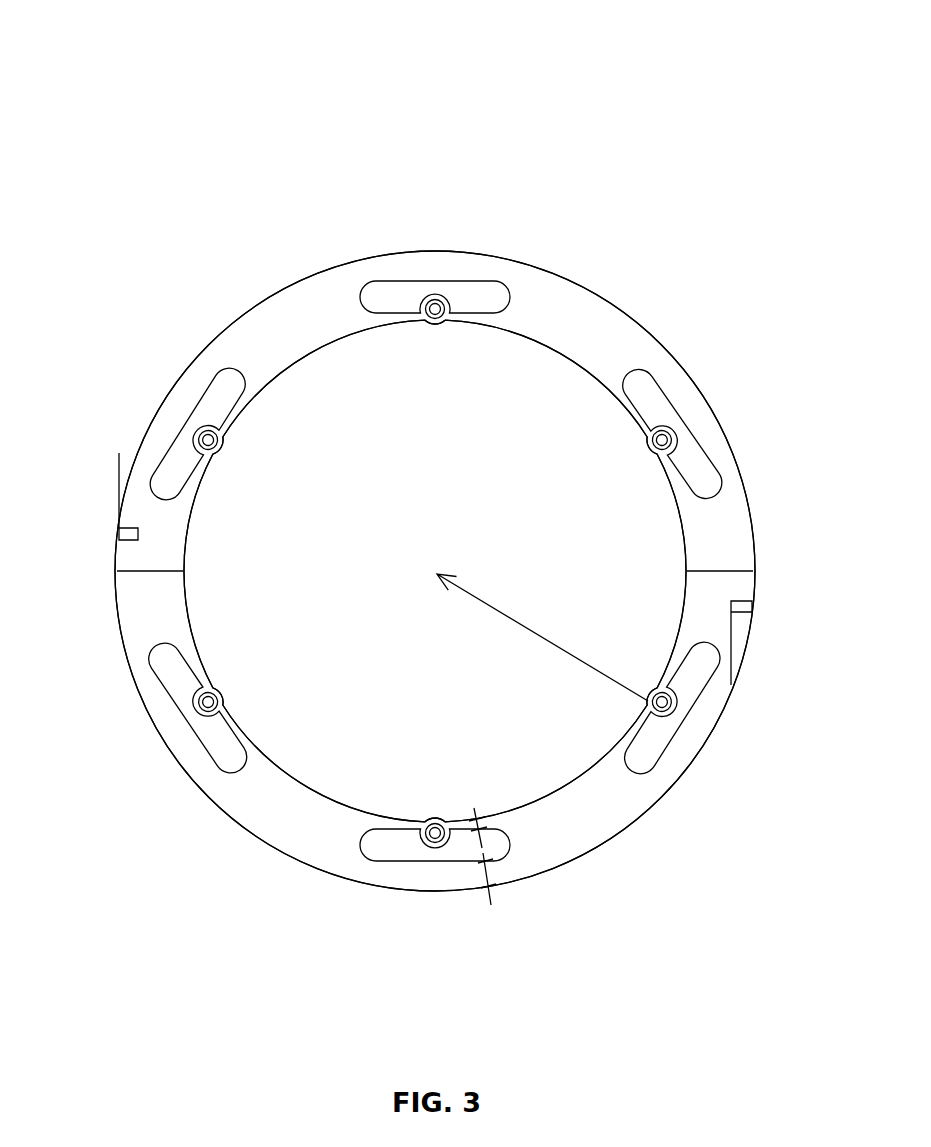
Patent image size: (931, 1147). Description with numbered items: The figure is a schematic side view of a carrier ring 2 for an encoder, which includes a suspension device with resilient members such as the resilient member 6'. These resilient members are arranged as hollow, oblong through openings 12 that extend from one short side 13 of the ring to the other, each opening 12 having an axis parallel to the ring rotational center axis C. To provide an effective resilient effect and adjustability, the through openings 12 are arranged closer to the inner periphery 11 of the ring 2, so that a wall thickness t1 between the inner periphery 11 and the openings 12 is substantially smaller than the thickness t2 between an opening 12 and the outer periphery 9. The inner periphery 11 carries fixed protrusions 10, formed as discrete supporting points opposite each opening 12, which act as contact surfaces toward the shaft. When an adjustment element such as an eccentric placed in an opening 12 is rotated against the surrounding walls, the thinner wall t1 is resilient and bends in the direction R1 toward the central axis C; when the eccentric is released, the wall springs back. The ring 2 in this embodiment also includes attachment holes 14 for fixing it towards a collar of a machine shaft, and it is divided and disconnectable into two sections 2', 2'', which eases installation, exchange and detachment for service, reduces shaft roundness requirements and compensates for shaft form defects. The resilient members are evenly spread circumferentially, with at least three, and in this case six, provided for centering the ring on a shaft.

The carrier ring 2 is at (435, 447).
The section 2' is at (475, 498).
The section 2'' is at (786, 624).
The outer periphery 9 is at (575, 279).
The inner periphery 11 is at (190, 529).
The short side 13 is at (140, 600).
The through opening 12 is at (392, 281).
The resilient member 6' is at (690, 391).
The protrusion 10 is at (422, 330).
The attachment hole 14 is at (433, 824).
The rotational center axis C is at (432, 573).
The radial direction R1 is at (542, 637).
The wall thickness t1 is at (479, 820).
The thickness t2 is at (487, 882).